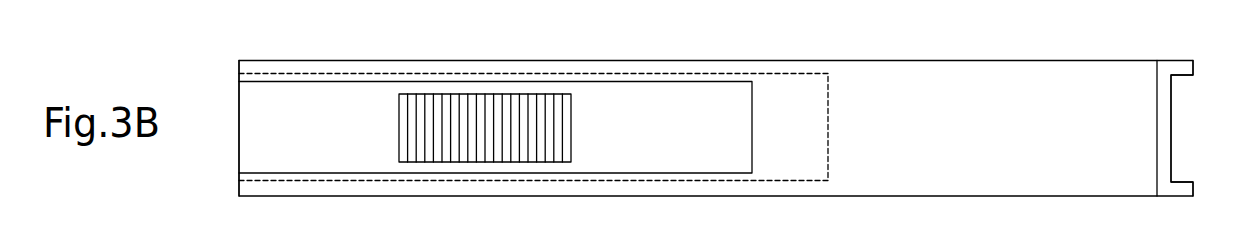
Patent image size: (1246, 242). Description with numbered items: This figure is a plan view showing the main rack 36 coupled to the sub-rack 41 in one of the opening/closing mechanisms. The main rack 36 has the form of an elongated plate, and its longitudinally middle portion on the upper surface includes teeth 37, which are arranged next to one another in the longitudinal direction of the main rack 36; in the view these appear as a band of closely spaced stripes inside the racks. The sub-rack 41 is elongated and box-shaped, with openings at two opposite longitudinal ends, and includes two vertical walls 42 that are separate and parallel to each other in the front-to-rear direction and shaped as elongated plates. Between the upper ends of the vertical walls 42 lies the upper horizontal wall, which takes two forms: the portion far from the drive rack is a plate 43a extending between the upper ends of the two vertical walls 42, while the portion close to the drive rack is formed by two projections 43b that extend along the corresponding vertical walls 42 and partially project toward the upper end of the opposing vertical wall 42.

The main rack 36 is at (263, 129).
The teeth 37 is at (511, 106).
The sub-rack 41 is at (953, 60).
The vertical walls 42 is at (1193, 68).
The plate 43a is at (844, 86).
The projections 43b is at (708, 180).